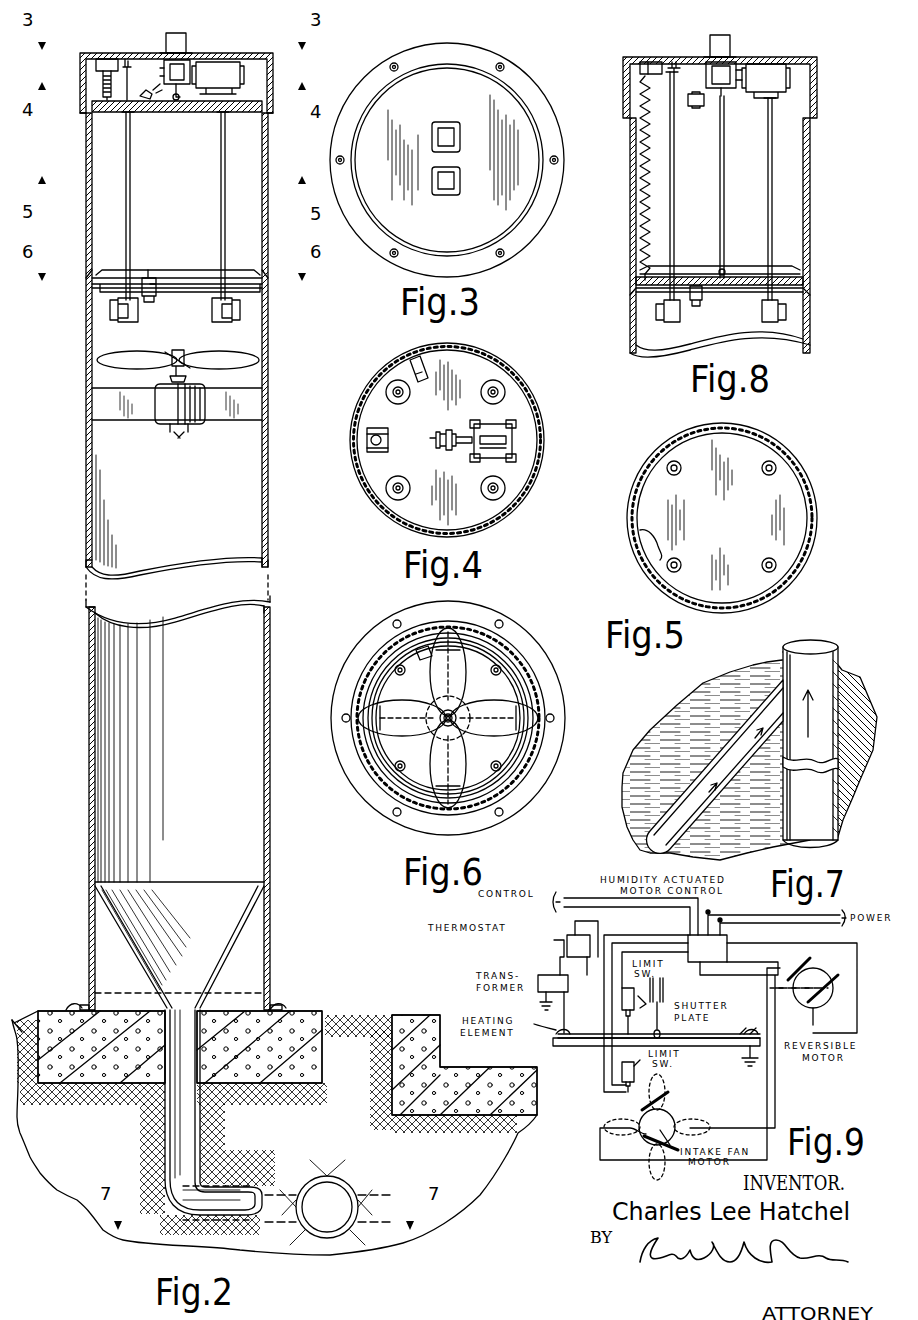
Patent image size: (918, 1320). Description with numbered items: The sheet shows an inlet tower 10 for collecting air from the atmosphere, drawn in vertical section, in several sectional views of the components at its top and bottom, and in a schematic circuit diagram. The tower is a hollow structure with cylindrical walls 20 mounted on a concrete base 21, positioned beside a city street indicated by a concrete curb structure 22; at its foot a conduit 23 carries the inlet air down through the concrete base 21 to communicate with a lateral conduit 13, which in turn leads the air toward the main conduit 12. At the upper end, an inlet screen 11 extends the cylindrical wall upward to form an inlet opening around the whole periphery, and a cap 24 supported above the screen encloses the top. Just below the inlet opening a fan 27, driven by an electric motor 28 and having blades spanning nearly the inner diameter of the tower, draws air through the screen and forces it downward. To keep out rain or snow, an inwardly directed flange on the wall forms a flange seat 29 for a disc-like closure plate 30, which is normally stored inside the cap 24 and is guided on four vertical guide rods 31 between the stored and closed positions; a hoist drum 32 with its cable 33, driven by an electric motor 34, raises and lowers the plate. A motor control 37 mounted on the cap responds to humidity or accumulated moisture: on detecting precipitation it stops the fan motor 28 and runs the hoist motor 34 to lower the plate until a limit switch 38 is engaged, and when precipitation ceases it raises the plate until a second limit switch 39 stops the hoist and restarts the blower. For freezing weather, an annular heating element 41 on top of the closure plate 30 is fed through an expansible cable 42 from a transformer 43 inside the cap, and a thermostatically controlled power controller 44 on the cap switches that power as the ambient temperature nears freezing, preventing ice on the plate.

In FIG. 2, the inlet tower 10 is at (80, 500).
In FIG. 8, the inlet screen 11 is at (806, 240).
In FIG. 5, the inlet screen 11 is at (794, 466).
In FIG. 6, the inlet screen 11 is at (518, 662).
In FIG. 2, the main conduit 12 is at (330, 1180).
In FIG. 7, the main conduit 12 is at (838, 803).
In FIG. 2, the lateral conduit 13 is at (238, 1224).
In FIG. 7, the lateral conduit 13 is at (727, 764).
In FIG. 2, the cylindrical walls 20 is at (90, 724).
In FIG. 2, the concrete base 21 is at (300, 1016).
In FIG. 2, the concrete curb structure 22 is at (424, 1016).
In FIG. 2, the conduit 23 is at (180, 1128).
In FIG. 2, the cap 24 is at (84, 70).
In FIG. 3, the cap 24 is at (492, 92).
In FIG. 2, the fan 27 is at (104, 356).
In FIG. 6, the fan 27 is at (436, 768).
In FIG. 2, the electric motor 28 is at (168, 410).
In FIG. 9, the electric motor 28 is at (648, 1114).
In FIG. 2, the flange seat 29 is at (90, 279).
In FIG. 8, the flange seat 29 is at (634, 285).
In FIG. 2, the closure plate 30 is at (206, 110).
In FIG. 8, the closure plate 30 is at (742, 276).
In FIG. 5, the closure plate 30 is at (746, 528).
In FIG. 9, the closure plate 30 is at (714, 1042).
In FIG. 2, the vertical guide rods 31 is at (222, 214).
In FIG. 4, the vertical guide rods 31 is at (406, 486).
In FIG. 8, the vertical guide rods 31 is at (770, 188).
In FIG. 5, the vertical guide rods 31 is at (680, 472).
In FIG. 2, the hoist drum 32 is at (188, 64).
In FIG. 4, the hoist drum 32 is at (446, 452).
In FIG. 8, the hoist drum 32 is at (734, 64).
In FIG. 9, the hoist drum 32 is at (652, 986).
In FIG. 8, the cable 33 is at (718, 146).
In FIG. 2, the electric motor 34 is at (225, 64).
In FIG. 4, the electric motor 34 is at (502, 432).
In FIG. 8, the electric motor 34 is at (782, 64).
In FIG. 9, the electric motor 34 is at (808, 978).
In FIG. 2, the motor control 37 is at (167, 42).
In FIG. 3, the motor control 37 is at (444, 127).
In FIG. 8, the motor control 37 is at (712, 44).
In FIG. 9, the motor control 37 is at (722, 956).
In FIG. 2, the limit switch 38 is at (150, 284).
In FIG. 8, the limit switch 38 is at (704, 290).
In FIG. 6, the limit switch 38 is at (430, 650).
In FIG. 9, the limit switch 38 is at (622, 1070).
In FIG. 2, the second limit switch 39 is at (156, 100).
In FIG. 4, the second limit switch 39 is at (412, 374).
In FIG. 8, the second limit switch 39 is at (708, 102).
In FIG. 9, the second limit switch 39 is at (642, 1004).
In FIG. 8, the heating element 41 is at (696, 276).
In FIG. 9, the heating element 41 is at (584, 1036).
In FIG. 8, the expansible cable 42 is at (642, 178).
In FIG. 2, the transformer 43 is at (108, 60).
In FIG. 4, the transformer 43 is at (386, 440).
In FIG. 8, the transformer 43 is at (626, 72).
In FIG. 9, the transformer 43 is at (546, 976).
In FIG. 3, the thermostatically controlled power controller 44 is at (448, 180).
In FIG. 9, the thermostatically controlled power controller 44 is at (574, 948).